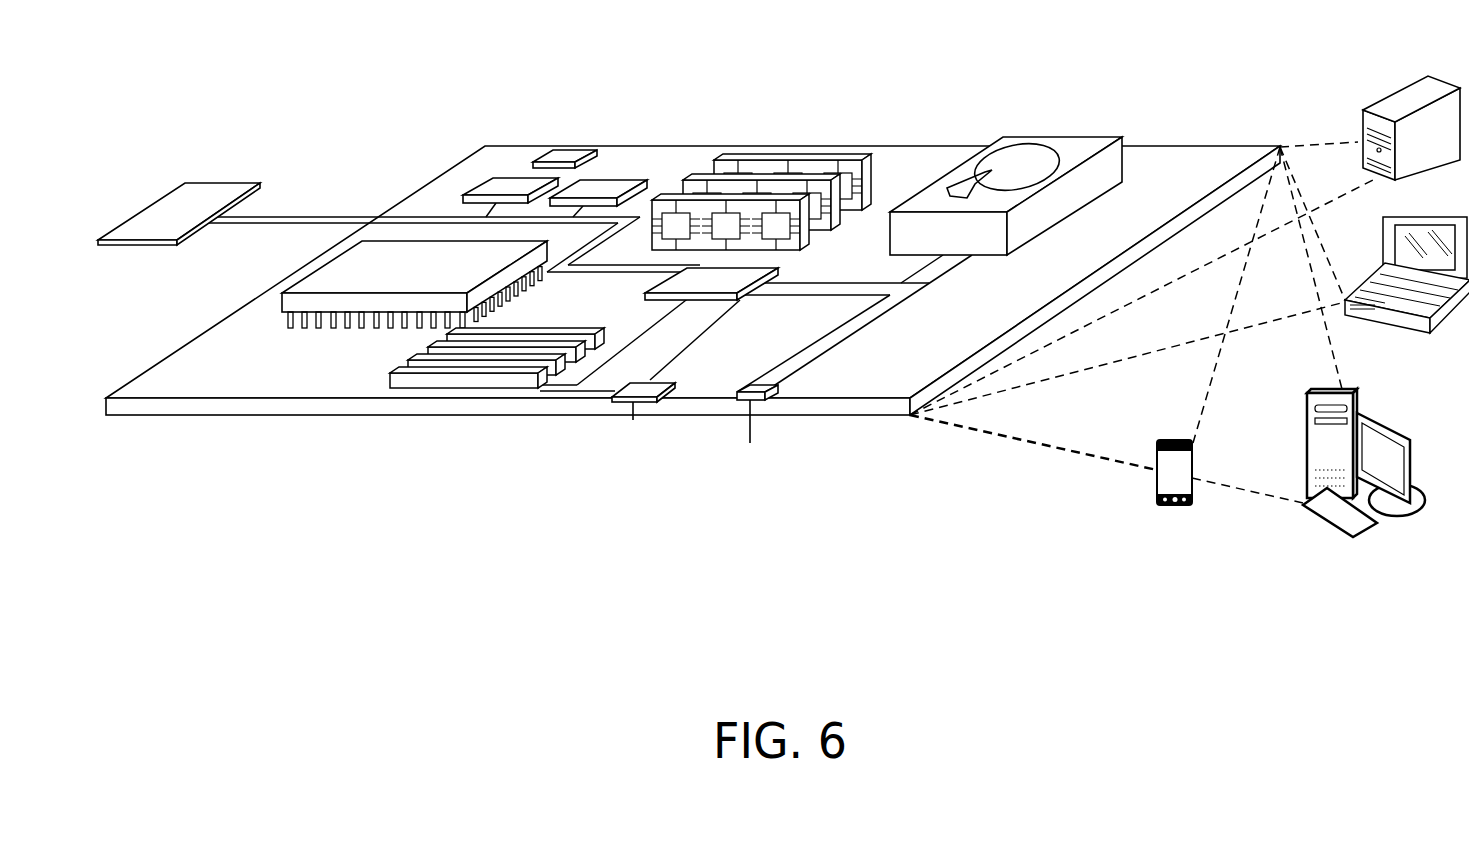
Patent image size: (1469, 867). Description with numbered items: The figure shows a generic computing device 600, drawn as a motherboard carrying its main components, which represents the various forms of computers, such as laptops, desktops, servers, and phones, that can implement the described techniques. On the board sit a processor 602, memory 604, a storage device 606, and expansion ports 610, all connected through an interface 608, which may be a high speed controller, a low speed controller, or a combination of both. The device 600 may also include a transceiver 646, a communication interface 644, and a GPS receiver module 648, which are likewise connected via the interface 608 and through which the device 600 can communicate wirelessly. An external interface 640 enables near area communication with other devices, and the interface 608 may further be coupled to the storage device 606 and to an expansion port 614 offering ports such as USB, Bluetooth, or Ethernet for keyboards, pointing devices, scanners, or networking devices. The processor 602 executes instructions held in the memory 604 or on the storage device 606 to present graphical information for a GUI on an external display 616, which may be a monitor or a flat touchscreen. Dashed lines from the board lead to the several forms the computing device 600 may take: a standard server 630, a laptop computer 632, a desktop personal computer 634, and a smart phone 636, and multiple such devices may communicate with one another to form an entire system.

The computing device 600 is at (428, 106).
The processor 602 is at (308, 270).
The memory 604 is at (797, 153).
The storage device 606 is at (1052, 135).
The interface 608 is at (680, 286).
The expansion ports 610 is at (418, 360).
The expansion port 614 is at (778, 392).
The display 616 is at (212, 197).
The standard server 630 is at (1385, 105).
The laptop computer 632 is at (1443, 213).
The desktop computer 634 is at (1405, 415).
The smart phone 636 is at (1166, 508).
The external interface 640 is at (660, 380).
The communication interface 644 is at (508, 180).
The transceiver 646 is at (565, 152).
The GPS receiver module 648 is at (606, 180).